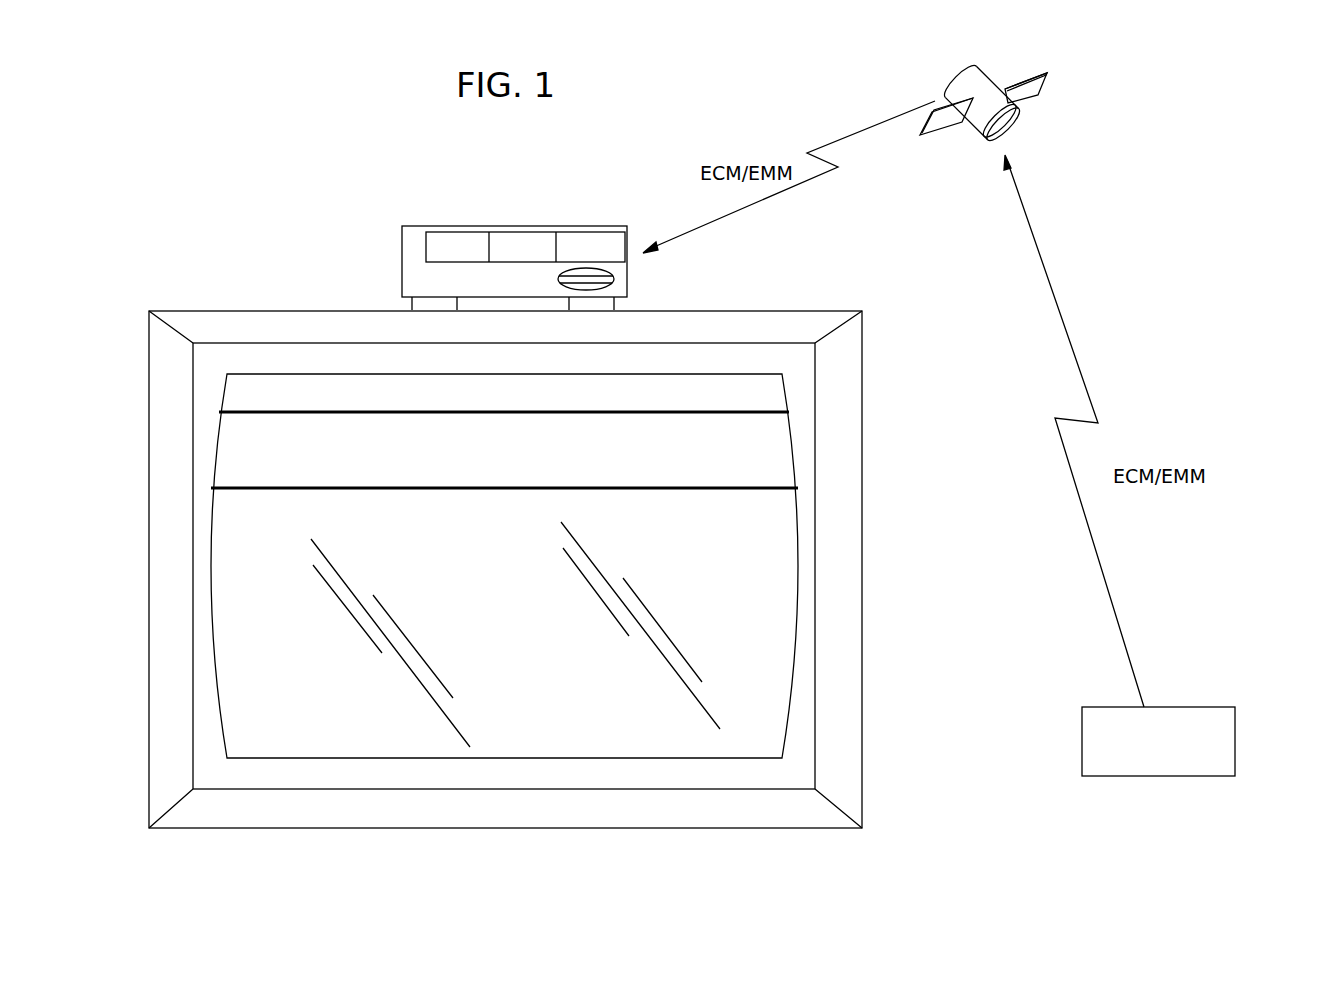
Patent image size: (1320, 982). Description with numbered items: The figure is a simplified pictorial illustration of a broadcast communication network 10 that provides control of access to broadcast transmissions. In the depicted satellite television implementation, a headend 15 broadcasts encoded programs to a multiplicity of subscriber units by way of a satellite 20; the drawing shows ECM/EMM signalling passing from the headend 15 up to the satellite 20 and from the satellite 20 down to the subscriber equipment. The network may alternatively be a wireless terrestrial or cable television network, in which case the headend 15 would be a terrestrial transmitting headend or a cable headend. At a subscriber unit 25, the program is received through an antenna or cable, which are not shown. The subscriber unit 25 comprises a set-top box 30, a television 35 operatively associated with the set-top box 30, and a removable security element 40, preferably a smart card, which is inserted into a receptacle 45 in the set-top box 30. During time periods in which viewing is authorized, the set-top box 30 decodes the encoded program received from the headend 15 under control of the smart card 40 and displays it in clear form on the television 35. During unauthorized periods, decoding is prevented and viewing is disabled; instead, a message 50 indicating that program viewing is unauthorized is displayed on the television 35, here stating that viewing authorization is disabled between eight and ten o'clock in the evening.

The broadcast communication network 10 is at (957, 727).
The headend 15 is at (1082, 736).
The satellite 20 is at (1030, 97).
The subscriber unit 25 is at (228, 193).
The set-top box 30 is at (423, 226).
The television 35 is at (160, 581).
The removable security element 40 is at (600, 272).
The receptacle 45 is at (586, 287).
The message 50 is at (256, 480).